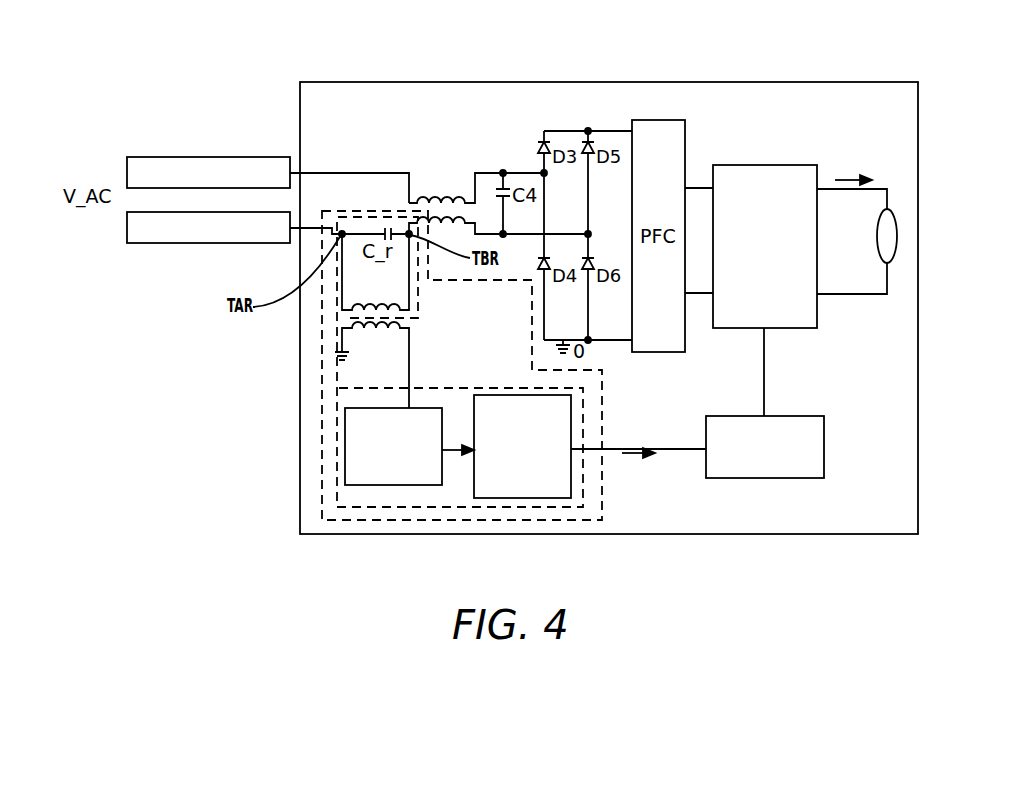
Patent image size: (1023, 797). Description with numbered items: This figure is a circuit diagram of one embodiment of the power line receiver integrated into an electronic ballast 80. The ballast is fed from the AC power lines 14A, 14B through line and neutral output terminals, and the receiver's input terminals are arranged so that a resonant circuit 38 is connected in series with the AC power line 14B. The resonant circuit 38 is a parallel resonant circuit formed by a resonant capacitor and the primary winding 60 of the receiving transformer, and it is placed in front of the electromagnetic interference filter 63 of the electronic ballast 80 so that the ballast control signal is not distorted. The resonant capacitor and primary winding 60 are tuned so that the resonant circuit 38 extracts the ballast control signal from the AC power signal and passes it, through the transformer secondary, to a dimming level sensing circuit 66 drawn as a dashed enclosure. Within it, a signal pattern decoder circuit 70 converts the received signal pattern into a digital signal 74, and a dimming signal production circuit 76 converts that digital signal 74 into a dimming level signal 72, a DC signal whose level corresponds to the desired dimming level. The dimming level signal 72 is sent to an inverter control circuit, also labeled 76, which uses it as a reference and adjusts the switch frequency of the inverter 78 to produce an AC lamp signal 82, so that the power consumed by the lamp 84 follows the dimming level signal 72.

The AC power line 14A is at (342, 172).
The AC power line 14B is at (313, 228).
The resonant circuit 38 is at (340, 317).
The primary winding 60 is at (352, 310).
The electromagnetic interference filter 63 is at (417, 208).
The dimming level sensing circuit 66 is at (337, 458).
The signal pattern decoder circuit 70 is at (388, 485).
The dimming level signal 72 is at (636, 455).
The digital signal 74 is at (453, 452).
The dimming signal production circuit 76 is at (518, 498).
The inverter 78 is at (770, 165).
The electronic ballast 80 is at (812, 82).
The AC lamp signal 82 is at (852, 178).
The lamp 84 is at (897, 237).